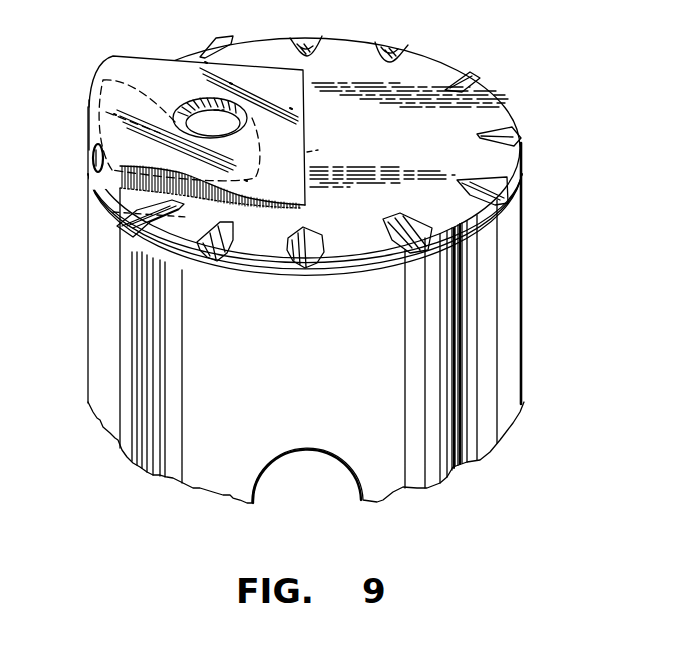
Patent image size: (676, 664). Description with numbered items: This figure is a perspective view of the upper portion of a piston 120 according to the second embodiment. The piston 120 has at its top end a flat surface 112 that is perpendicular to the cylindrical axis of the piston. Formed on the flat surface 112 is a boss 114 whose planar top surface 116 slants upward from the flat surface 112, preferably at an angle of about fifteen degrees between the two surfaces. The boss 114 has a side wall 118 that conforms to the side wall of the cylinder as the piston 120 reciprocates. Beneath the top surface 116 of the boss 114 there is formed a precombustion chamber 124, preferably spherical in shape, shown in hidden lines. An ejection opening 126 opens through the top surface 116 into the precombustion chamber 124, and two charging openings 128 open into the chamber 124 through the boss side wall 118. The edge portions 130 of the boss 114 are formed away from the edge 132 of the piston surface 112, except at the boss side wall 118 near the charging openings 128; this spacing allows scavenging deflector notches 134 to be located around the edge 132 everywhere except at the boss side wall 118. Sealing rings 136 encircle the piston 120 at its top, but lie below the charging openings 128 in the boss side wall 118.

The flat surface 112 is at (433, 67).
The boss 114 is at (309, 52).
The planar top surface 116 is at (305, 94).
The side wall 118 is at (91, 142).
The piston 120 is at (508, 332).
The precombustion chamber 124 is at (320, 150).
The ejection opening 126 is at (243, 117).
The charging openings 128 is at (101, 75).
The edge portions 130 is at (133, 178).
The edge 132 is at (103, 226).
The scavenging deflector notches 134 is at (311, 48).
The sealing rings 136 is at (546, 198).